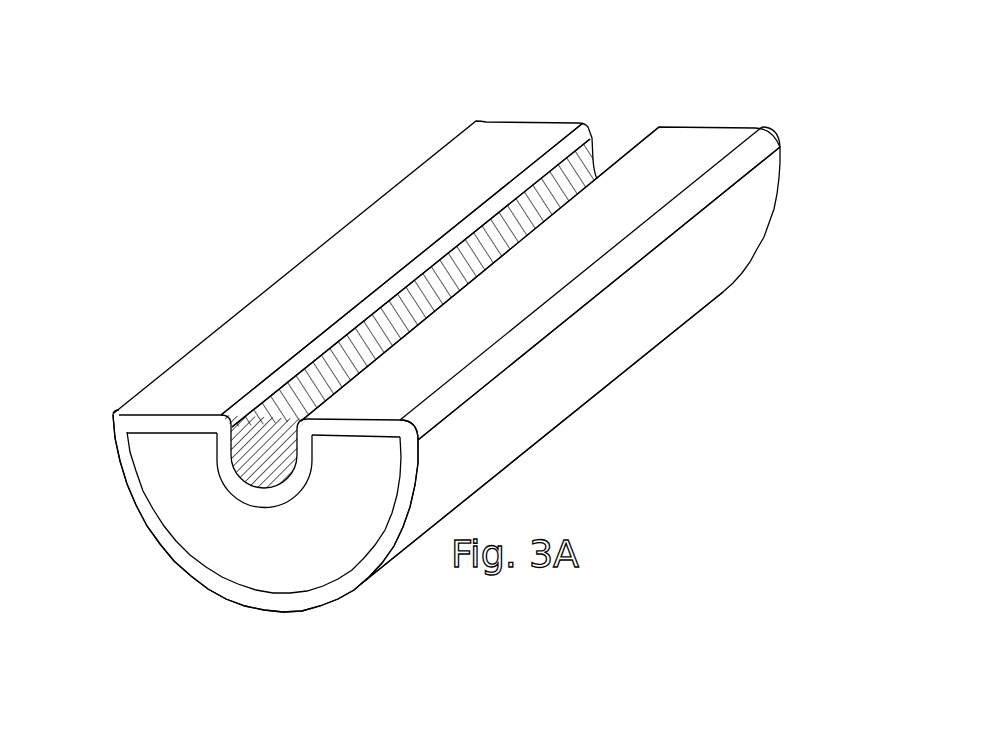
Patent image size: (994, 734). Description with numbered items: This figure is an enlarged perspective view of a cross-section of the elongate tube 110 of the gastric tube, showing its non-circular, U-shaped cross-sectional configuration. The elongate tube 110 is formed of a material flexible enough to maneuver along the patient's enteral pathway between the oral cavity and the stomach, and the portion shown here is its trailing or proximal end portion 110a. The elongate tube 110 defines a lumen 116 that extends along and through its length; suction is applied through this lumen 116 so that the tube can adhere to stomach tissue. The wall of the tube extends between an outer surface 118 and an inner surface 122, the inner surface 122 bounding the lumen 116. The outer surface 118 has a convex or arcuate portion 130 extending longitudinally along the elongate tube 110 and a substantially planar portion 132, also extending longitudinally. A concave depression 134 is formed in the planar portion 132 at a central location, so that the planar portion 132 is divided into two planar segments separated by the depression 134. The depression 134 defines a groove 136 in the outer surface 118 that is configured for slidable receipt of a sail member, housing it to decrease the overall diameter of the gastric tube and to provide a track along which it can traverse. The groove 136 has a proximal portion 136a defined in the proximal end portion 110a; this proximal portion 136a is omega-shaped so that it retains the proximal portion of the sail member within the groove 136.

The elongate tube 110 is at (352, 203).
The proximal end portion 110a is at (667, 252).
The lumen 116 is at (777, 131).
The outer surface 118 is at (588, 362).
The inner surface 122 is at (400, 473).
The convex or arcuate portion 130 is at (163, 552).
The planar portion 132 is at (495, 140).
The concave depression 134 is at (233, 480).
The groove 136 is at (258, 418).
The proximal portion of groove 136a is at (360, 337).